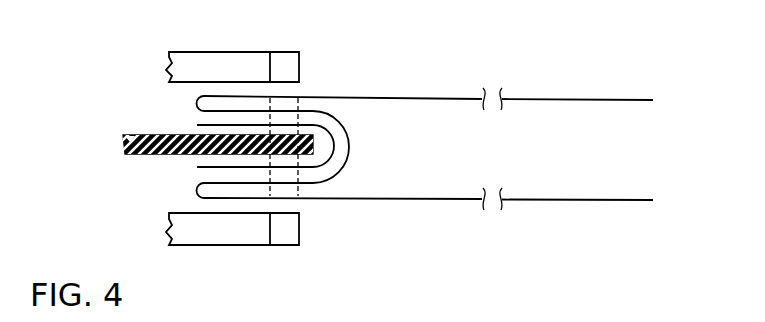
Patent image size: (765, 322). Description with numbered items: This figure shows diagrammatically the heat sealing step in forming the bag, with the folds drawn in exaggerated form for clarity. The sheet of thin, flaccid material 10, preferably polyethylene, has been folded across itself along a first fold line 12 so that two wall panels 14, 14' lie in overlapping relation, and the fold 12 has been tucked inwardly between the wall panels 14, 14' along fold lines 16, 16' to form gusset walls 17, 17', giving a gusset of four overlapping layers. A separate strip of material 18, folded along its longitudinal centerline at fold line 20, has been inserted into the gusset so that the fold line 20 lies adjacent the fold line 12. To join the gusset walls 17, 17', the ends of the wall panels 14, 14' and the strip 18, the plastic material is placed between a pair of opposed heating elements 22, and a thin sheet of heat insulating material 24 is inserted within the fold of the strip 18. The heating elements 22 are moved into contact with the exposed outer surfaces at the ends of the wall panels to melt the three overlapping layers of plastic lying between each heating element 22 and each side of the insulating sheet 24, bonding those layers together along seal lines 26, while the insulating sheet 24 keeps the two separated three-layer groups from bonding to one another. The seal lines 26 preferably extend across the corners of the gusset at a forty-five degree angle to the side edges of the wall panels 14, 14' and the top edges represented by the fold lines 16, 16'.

The sheet of thin, flaccid material 10 is at (601, 90).
The first fold line 12 is at (349, 150).
The wall panel 14 is at (343, 76).
The wall panel 14' is at (343, 215).
The fold line 16 is at (223, 98).
The fold line 16' is at (227, 190).
The gusset wall 17 is at (292, 76).
The gusset wall 17' is at (212, 230).
The strip of material 18 is at (186, 118).
The fold line 20 is at (333, 141).
The heating elements 22 is at (221, 52).
The sheet of heat insulating material 24 is at (125, 143).
The seal lines 26 is at (298, 102).